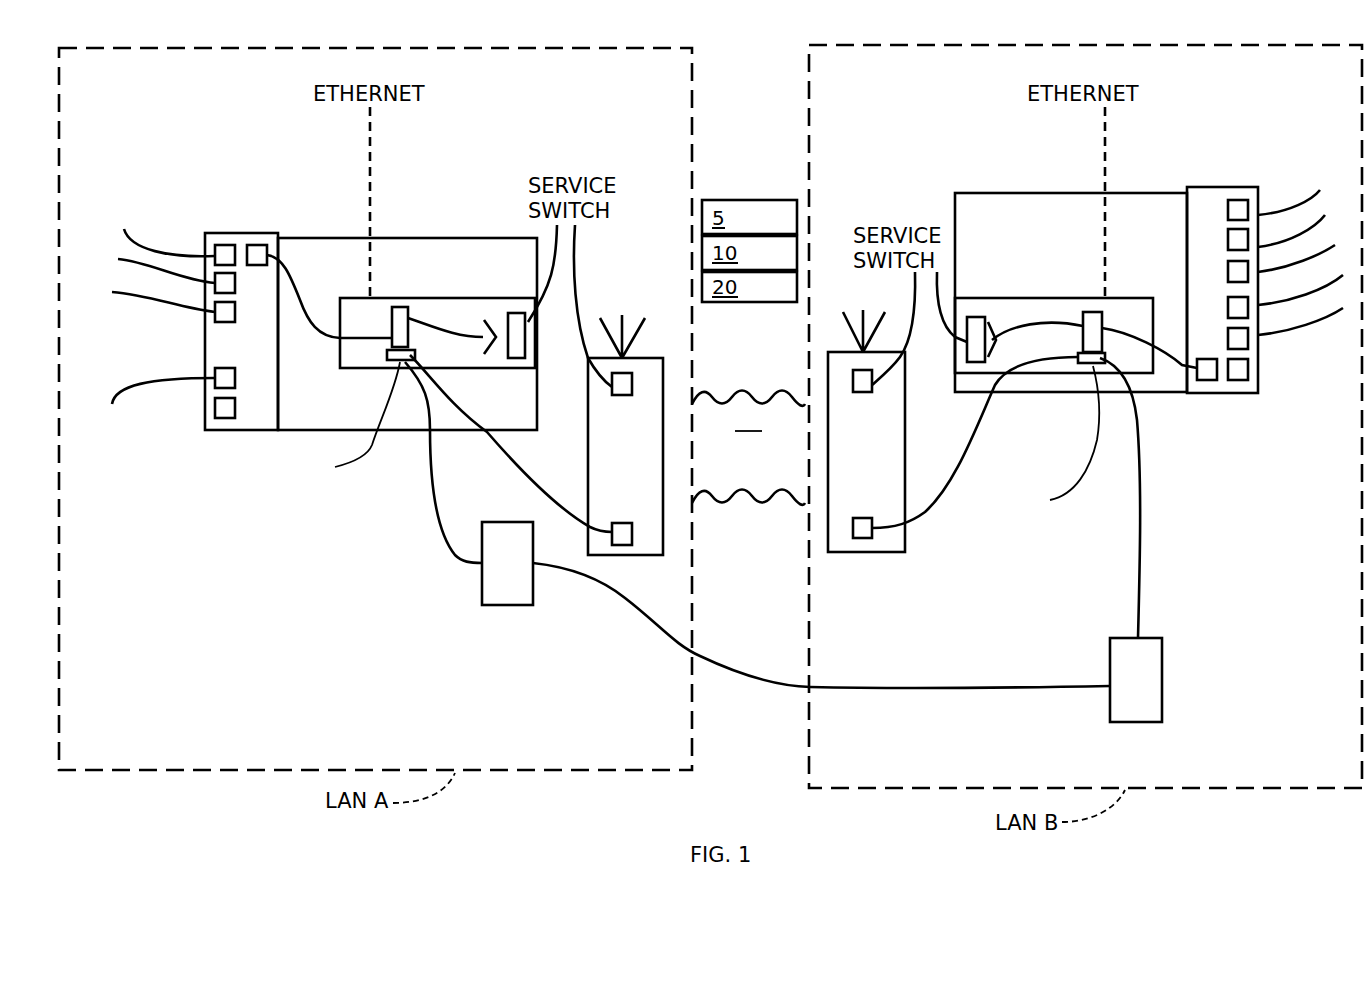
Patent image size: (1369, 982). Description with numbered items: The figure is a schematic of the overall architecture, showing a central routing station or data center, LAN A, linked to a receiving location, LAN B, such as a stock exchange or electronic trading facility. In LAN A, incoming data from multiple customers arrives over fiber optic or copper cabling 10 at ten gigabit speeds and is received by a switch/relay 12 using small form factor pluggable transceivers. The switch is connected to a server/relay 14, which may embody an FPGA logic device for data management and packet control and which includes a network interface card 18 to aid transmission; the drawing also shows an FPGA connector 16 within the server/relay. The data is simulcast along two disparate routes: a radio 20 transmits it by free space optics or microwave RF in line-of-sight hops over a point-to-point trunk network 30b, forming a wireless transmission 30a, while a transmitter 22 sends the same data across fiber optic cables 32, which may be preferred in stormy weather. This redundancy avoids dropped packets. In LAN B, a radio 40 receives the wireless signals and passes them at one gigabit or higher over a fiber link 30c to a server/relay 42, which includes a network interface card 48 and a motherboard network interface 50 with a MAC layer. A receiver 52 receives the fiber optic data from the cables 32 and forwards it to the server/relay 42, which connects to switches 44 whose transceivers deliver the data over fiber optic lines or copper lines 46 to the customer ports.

The fiber optic or copper cabling 10 is at (122, 150).
The switch/relay 12 is at (268, 210).
The server/relay 14 is at (422, 236).
The FPGA connector 16 is at (403, 365).
The network interface card 18 is at (515, 312).
The radio 20 is at (586, 452).
The transmitter 22 is at (491, 606).
The wireless transmission 30a is at (505, 458).
The point-to-point trunk network 30b is at (767, 383).
The fiber link 30c is at (952, 503).
The fiber optic cables 32 is at (798, 685).
The radio 40 is at (905, 425).
The server/relay 42 is at (1030, 191).
The switches 44 is at (1203, 186).
The fiber optic lines or copper lines 46 is at (1259, 120).
The network interface card 48 is at (975, 345).
The motherboard network interface 50 is at (1095, 366).
The receiver 52 is at (1162, 690).